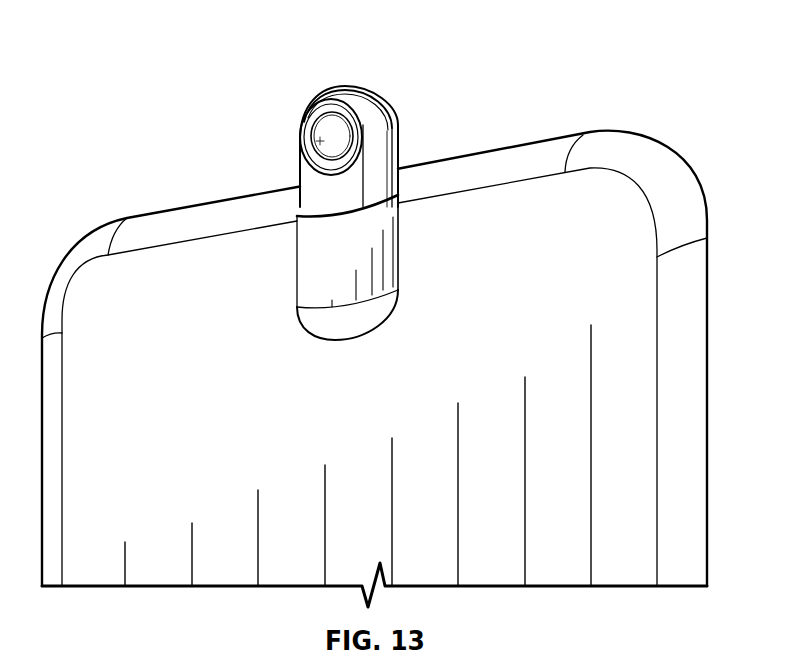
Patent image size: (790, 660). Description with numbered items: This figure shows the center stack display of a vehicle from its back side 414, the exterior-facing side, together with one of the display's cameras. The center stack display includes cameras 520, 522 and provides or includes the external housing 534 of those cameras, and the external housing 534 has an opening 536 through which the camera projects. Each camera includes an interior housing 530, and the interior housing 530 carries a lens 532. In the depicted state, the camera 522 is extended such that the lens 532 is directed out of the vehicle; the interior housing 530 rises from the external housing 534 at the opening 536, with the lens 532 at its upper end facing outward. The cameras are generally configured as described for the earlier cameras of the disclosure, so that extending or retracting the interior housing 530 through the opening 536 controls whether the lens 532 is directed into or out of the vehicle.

The camera 520 is at (550, 83).
The back side 414 is at (180, 408).
The camera 522 is at (333, 178).
The interior housing 530 is at (343, 84).
The lens 532 is at (303, 143).
The opening 536 is at (318, 188).
The external housing 534 is at (388, 274).